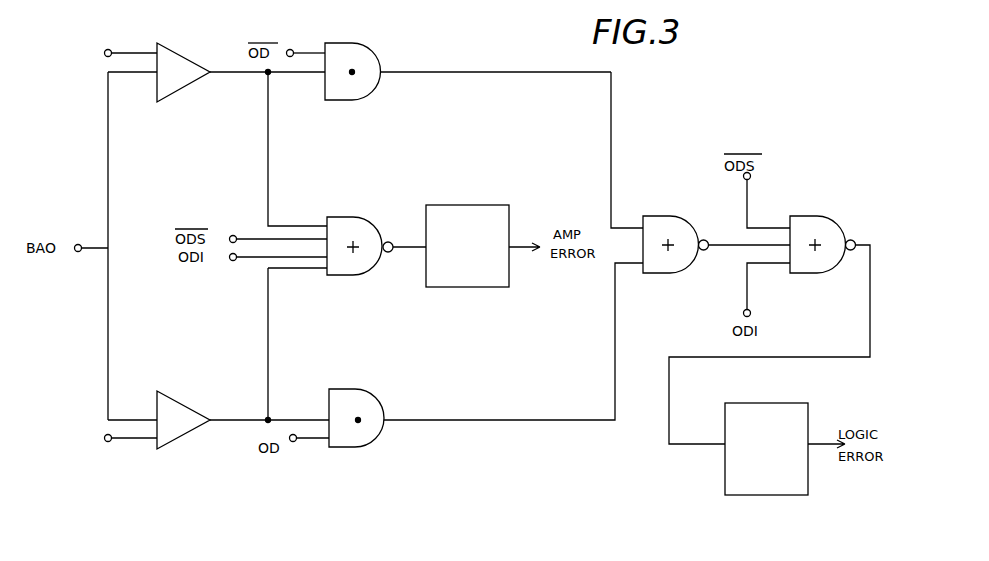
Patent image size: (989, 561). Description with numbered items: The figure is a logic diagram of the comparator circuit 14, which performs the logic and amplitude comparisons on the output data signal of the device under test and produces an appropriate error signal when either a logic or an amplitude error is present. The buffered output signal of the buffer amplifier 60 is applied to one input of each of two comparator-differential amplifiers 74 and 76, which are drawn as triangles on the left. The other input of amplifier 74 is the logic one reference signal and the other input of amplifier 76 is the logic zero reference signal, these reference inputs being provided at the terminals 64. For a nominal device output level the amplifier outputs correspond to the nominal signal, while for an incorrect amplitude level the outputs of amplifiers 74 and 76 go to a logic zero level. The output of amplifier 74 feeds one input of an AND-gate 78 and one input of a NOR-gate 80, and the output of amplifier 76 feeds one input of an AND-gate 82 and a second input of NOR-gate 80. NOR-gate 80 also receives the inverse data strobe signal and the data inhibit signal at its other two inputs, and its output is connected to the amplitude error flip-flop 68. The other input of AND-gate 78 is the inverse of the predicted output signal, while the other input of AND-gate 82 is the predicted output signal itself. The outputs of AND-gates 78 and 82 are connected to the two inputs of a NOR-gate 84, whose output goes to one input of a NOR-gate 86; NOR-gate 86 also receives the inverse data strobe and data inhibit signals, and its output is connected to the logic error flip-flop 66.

The comparator circuit 14 is at (637, 115).
The buffer amplifier 60 is at (498, 58).
The reference signal input terminals 64 is at (126, 52).
The logic error flip-flop 66 is at (752, 487).
The amplitude error flip-flop 68 is at (452, 278).
The comparator-differential amplifier 74 is at (174, 63).
The comparator-differential amplifier 76 is at (185, 428).
The AND-gate 78 is at (352, 56).
The NOR-gate 80 is at (356, 228).
The AND-gate 82 is at (363, 435).
The NOR-gate 84 is at (663, 228).
The NOR-gate 86 is at (821, 228).